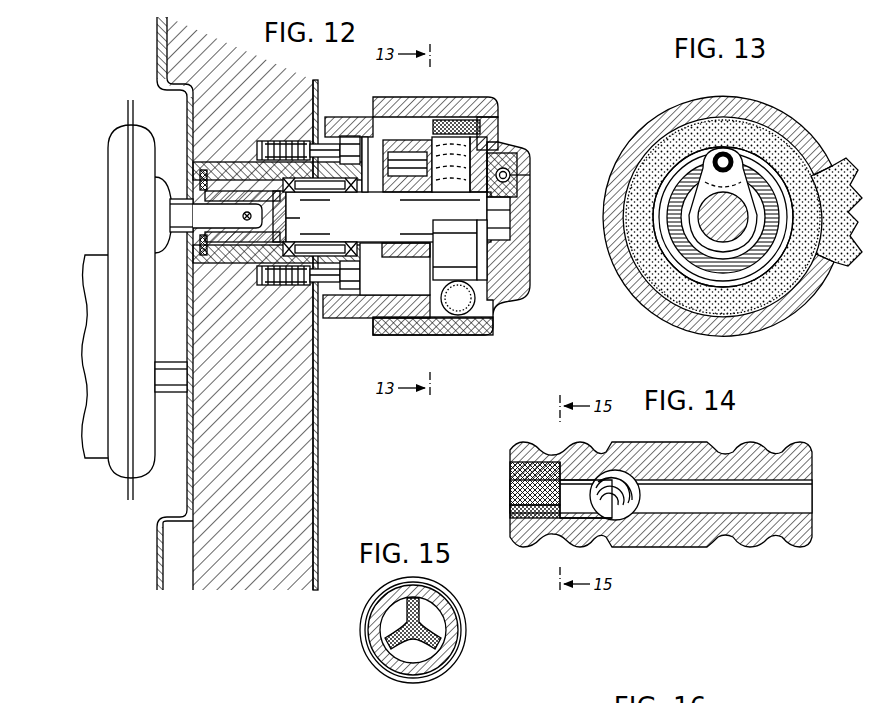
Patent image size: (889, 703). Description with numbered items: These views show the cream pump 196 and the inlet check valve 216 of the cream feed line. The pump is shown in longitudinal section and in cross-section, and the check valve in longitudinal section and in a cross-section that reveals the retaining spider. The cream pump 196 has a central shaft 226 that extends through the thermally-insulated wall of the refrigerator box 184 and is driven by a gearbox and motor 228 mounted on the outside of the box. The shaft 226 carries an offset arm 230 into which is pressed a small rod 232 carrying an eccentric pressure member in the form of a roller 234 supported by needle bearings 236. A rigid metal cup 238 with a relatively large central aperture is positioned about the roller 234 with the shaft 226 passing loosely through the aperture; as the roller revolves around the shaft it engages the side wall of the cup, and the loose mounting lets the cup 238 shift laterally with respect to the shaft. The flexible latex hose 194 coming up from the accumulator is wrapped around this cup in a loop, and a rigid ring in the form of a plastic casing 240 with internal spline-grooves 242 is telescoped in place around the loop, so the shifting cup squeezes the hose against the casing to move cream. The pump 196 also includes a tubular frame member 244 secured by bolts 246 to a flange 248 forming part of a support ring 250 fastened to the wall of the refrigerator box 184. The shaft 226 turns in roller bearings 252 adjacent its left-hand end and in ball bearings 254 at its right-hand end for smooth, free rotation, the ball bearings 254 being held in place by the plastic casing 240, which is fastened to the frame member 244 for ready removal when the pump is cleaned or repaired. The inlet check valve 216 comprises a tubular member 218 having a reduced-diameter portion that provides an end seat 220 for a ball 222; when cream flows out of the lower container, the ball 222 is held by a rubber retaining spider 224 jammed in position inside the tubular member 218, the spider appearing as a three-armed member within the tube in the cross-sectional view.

In FIG. 12, the refrigerator box 184 is at (150, 55).
In FIG. 12, the flexible hose 194 is at (434, 133).
In FIG. 13, the flexible hose 194 is at (810, 180).
In FIG. 12, the cream pump 196 is at (476, 337).
In FIG. 13, the cream pump 196 is at (812, 312).
In FIG. 14, the inlet check valve 216 is at (730, 548).
In FIG. 15, the inlet check valve 216 is at (358, 614).
In FIG. 14, the tubular member 218 is at (670, 455).
In FIG. 15, the tubular member 218 is at (450, 616).
In FIG. 14, the end seat 220 is at (625, 522).
In FIG. 14, the ball 222 is at (625, 496).
In FIG. 14, the retaining spider 224 is at (510, 477).
In FIG. 15, the retaining spider 224 is at (434, 647).
In FIG. 12, the central shaft 226 is at (396, 243).
In FIG. 13, the central shaft 226 is at (726, 232).
In FIG. 12, the gearbox and motor 228 is at (103, 474).
In FIG. 12, the offset arm 230 is at (388, 150).
In FIG. 13, the offset arm 230 is at (747, 188).
In FIG. 12, the small rod 232 is at (400, 182).
In FIG. 13, the small rod 232 is at (722, 152).
In FIG. 12, the roller 234 is at (468, 152).
In FIG. 13, the roller 234 is at (762, 185).
In FIG. 12, the needle bearings 236 is at (452, 160).
In FIG. 12, the rigid metal cup 238 is at (436, 288).
In FIG. 13, the rigid metal cup 238 is at (675, 185).
In FIG. 12, the plastic casing 240 is at (480, 110).
In FIG. 13, the plastic casing 240 is at (620, 258).
In FIG. 12, the spline-grooves 242 is at (456, 120).
In FIG. 13, the spline-grooves 242 is at (652, 289).
In FIG. 12, the tubular frame member 244 is at (352, 301).
In FIG. 12, the bolts 246 is at (314, 150).
In FIG. 12, the flange 248 is at (262, 292).
In FIG. 12, the support ring 250 is at (242, 303).
In FIG. 12, the roller bearings 252 is at (330, 242).
In FIG. 12, the ball bearings 254 is at (512, 172).